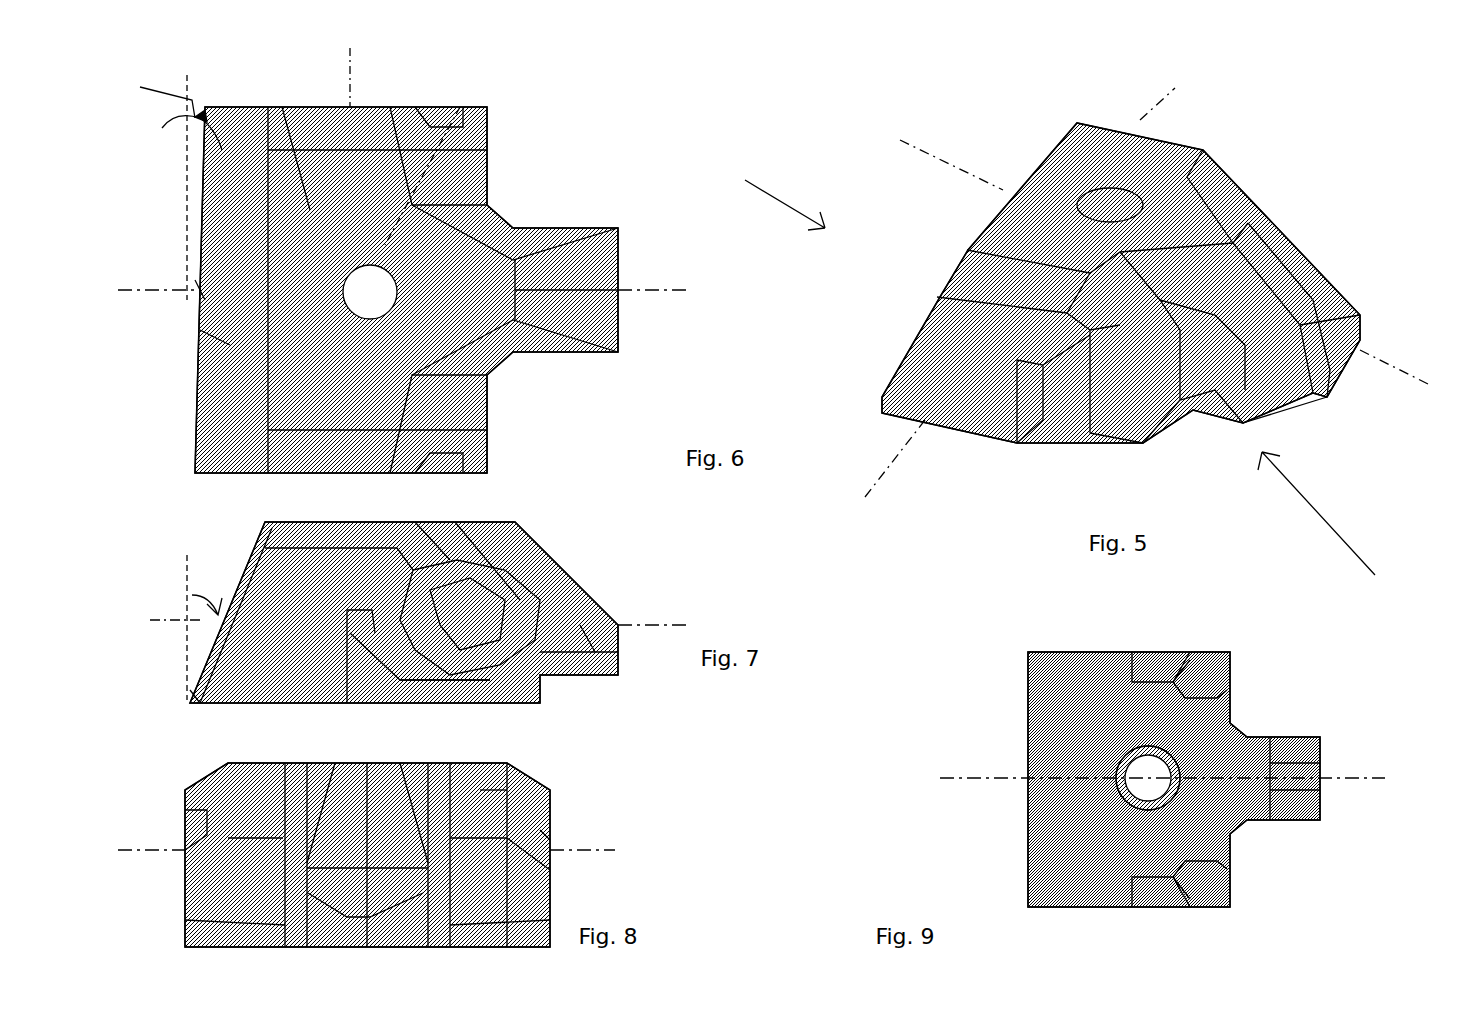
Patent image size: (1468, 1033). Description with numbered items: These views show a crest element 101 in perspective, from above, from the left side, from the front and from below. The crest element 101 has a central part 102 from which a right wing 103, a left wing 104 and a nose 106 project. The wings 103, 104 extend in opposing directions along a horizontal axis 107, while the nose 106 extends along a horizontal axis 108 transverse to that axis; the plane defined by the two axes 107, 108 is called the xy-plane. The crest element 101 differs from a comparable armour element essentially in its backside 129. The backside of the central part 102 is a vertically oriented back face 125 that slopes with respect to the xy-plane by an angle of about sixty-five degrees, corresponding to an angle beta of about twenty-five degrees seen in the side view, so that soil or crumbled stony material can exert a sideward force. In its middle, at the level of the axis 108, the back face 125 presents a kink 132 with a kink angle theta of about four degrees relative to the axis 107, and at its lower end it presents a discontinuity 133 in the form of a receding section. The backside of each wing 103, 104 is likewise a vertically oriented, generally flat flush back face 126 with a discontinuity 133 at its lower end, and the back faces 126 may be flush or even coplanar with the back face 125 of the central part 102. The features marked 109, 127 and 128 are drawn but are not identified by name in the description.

In FIG. 5, the crest element 101 is at (1334, 524).
In FIG. 6, the central part 102 is at (468, 106).
In FIG. 7, the central part 102 is at (335, 522).
In FIG. 8, the central part 102 is at (318, 763).
In FIG. 5, the central part 102 is at (1060, 188).
In FIG. 9, the central part 102 is at (1080, 765).
In FIG. 6, the right wing 103 is at (284, 107).
In FIG. 8, the right wing 103 is at (515, 790).
In FIG. 5, the right wing 103 is at (1125, 143).
In FIG. 9, the right wing 103 is at (1075, 890).
In FIG. 6, the left wing 104 is at (378, 405).
In FIG. 7, the left wing 104 is at (510, 565).
In FIG. 8, the left wing 104 is at (230, 905).
In FIG. 5, the left wing 104 is at (940, 342).
In FIG. 9, the left wing 104 is at (1098, 680).
In FIG. 6, the nose 106 is at (570, 262).
In FIG. 7, the nose 106 is at (597, 675).
In FIG. 8, the nose 106 is at (548, 880).
In FIG. 5, the nose 106 is at (1327, 293).
In FIG. 9, the nose 106 is at (1296, 750).
In FIG. 6, the horizontal axis 107 is at (355, 72).
In FIG. 8, the horizontal axis 107 is at (135, 845).
In FIG. 5, the horizontal axis 107 is at (905, 452).
In FIG. 6, the horizontal axis 108 is at (660, 290).
In FIG. 7, the horizontal axis 108 is at (672, 625).
In FIG. 5, the horizontal axis 108 is at (1390, 390).
In FIG. 9, the horizontal axis 108 is at (940, 778).
In FIG. 6, the bore 109 is at (360, 263).
In FIG. 6, the back face 125 is at (232, 342).
In FIG. 7, the back face 125 is at (240, 570).
In FIG. 5, the back face 125 is at (983, 220).
In FIG. 9, the back face 125 is at (1028, 765).
In FIG. 6, the back face 126 is at (232, 178).
In FIG. 7, the back face 126 is at (215, 670).
In FIG. 9, the back face 126 is at (1000, 655).
In FIG. 7, the recess 127 is at (410, 703).
In FIG. 7, the chip groove 128 is at (385, 522).
In FIG. 5, the backside 129 is at (764, 193).
In FIG. 6, the kink 132 is at (190, 290).
In FIG. 7, the kink 132 is at (205, 640).
In FIG. 5, the kink 132 is at (1007, 188).
In FIG. 9, the kink 132 is at (1028, 795).
In FIG. 7, the discontinuity 133 is at (190, 697).
In FIG. 5, the discontinuity 133 is at (885, 405).